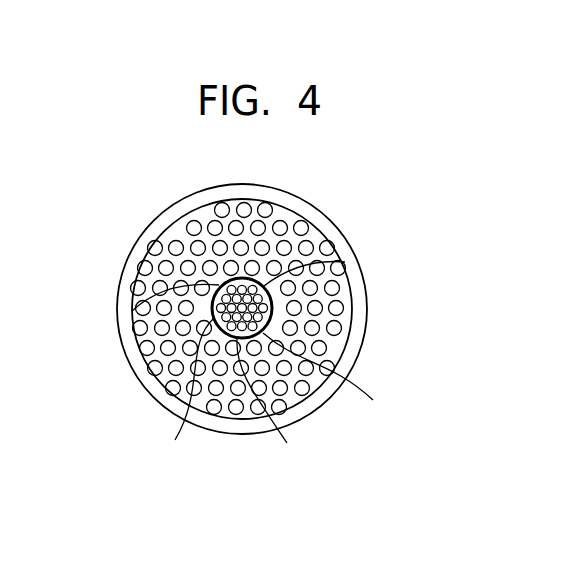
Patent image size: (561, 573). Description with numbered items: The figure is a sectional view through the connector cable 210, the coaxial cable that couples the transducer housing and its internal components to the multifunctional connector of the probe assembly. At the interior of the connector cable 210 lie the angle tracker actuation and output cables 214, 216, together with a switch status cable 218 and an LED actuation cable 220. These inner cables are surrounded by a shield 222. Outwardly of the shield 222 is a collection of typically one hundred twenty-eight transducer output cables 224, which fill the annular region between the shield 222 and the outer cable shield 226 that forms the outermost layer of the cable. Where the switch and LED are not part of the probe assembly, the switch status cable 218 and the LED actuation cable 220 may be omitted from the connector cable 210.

The connector cable 210 is at (421, 197).
The angle tracker actuation and output cable 214 is at (178, 394).
The angle tracker actuation and output cable 216 is at (329, 385).
The switch status cable 218 is at (132, 311).
The LED actuation cable 220 is at (273, 407).
The shield 222 is at (345, 262).
The transducer output cables 224 is at (263, 210).
The outer cable shield 226 is at (148, 232).